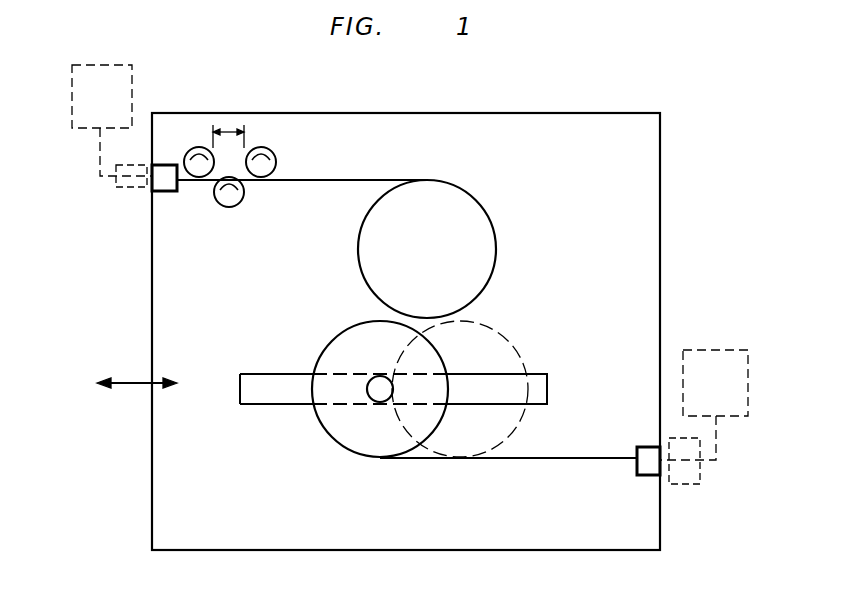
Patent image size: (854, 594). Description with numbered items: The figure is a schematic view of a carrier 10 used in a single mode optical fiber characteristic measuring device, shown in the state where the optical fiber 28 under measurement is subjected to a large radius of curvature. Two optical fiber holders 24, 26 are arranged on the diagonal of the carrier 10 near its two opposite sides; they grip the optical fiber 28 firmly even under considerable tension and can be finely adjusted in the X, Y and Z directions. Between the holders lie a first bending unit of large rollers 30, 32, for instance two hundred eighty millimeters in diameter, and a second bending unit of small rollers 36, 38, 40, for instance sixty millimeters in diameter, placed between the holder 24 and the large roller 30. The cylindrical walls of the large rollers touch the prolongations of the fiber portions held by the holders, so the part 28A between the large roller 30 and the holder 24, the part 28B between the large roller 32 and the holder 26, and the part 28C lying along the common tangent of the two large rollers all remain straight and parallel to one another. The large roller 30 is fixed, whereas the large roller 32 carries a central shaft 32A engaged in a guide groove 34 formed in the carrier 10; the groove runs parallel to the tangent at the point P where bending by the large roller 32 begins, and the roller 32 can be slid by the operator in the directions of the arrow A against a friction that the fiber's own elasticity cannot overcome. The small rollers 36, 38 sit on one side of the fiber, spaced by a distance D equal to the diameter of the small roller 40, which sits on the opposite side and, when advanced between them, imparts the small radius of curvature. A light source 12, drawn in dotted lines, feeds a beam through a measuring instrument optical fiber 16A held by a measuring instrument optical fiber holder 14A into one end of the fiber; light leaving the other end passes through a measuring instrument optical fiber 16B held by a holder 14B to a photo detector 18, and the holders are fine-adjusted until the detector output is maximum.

The carrier 10 is at (661, 120).
The light source 12 is at (749, 364).
The measuring instrument optical fiber holder 14A is at (685, 484).
The measuring instrument optical fiber holder 14B is at (128, 188).
The measuring instrument optical fiber 16A is at (718, 447).
The measuring instrument optical fiber 16B is at (98, 142).
The photo detector 18 is at (132, 67).
The optical fiber holder 24 is at (167, 191).
The optical fiber holder 26 is at (637, 475).
The optical fiber 28 is at (565, 456).
The part of the optical fiber 28A is at (349, 178).
The part of the optical fiber 28B is at (497, 460).
The part of the optical fiber 28C is at (390, 321).
The large roller 30 is at (480, 219).
The large roller 32 is at (433, 357).
The central shaft 32A is at (368, 394).
The guide groove 34 is at (240, 378).
The small roller 36 is at (190, 148).
The small roller 38 is at (262, 148).
The small roller 40 is at (230, 207).
The arrow A is at (133, 386).
The distance D is at (228, 127).
The point P is at (380, 458).